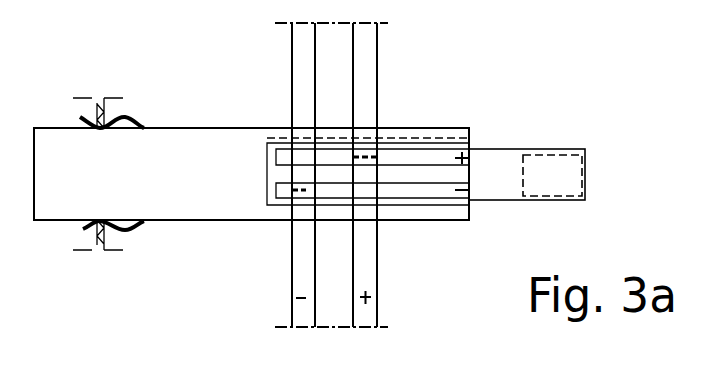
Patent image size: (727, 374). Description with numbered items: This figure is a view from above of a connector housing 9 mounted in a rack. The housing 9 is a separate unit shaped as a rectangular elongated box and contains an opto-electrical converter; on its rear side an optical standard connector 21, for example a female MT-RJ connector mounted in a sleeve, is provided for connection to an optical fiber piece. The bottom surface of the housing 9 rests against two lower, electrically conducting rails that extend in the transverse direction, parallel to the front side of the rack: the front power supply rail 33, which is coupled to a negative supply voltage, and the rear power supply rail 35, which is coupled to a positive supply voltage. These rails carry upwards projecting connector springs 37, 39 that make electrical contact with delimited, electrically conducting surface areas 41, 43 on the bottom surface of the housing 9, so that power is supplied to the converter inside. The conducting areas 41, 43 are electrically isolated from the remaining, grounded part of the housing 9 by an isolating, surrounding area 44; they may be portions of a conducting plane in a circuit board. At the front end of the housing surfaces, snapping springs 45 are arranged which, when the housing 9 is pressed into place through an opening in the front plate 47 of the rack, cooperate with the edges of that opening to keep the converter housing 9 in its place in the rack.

The connector housing 9 is at (197, 222).
The optical standard connector 21 is at (556, 150).
The front power supply rail 33 is at (296, 76).
The rear power supply rail 35 is at (378, 68).
The connector spring 37 is at (302, 197).
The connector spring 39 is at (362, 150).
The electrically conducting surface area 41 is at (470, 191).
The electrically conducting surface area 43 is at (465, 157).
The isolating surrounding area 44 is at (453, 148).
The snapping spring 45 is at (137, 126).
The front plate 47 is at (96, 232).